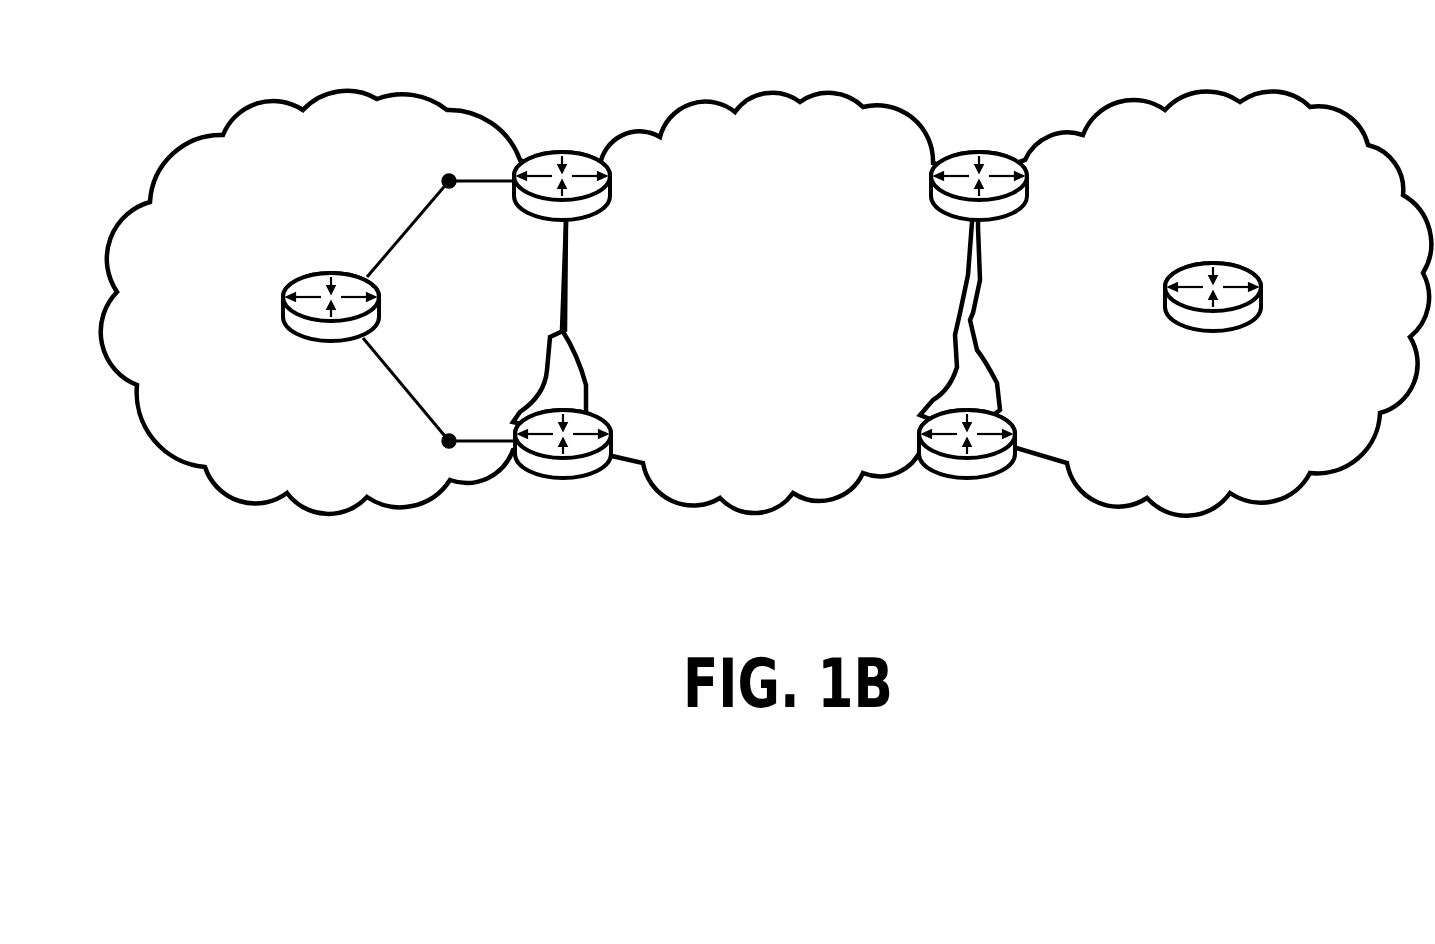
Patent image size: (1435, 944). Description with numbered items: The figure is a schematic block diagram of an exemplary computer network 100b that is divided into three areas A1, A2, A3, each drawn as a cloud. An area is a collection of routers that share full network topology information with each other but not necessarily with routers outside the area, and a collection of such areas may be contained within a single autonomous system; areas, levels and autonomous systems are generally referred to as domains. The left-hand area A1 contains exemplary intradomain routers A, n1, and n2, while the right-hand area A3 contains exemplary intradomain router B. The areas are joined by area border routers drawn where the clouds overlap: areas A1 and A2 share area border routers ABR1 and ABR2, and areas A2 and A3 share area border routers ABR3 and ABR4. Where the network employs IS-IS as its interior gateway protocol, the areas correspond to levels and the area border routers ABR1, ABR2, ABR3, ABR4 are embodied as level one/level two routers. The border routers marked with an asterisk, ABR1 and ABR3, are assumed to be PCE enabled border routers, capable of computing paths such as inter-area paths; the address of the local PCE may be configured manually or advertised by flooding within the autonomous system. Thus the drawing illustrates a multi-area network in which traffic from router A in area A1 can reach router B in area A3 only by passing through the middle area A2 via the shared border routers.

The computer network 100b is at (766, 424).
The area A1 is at (333, 302).
The area A2 is at (770, 303).
The area A3 is at (1199, 303).
The intradomain router A is at (308, 281).
The intradomain router B is at (1237, 321).
The area border router ABR1 is at (576, 147).
The area border router ABR2 is at (537, 480).
The area border router ABR3 is at (983, 147).
The area border router ABR4 is at (979, 480).
The intradomain router n1 is at (441, 206).
The intradomain router n2 is at (439, 408).